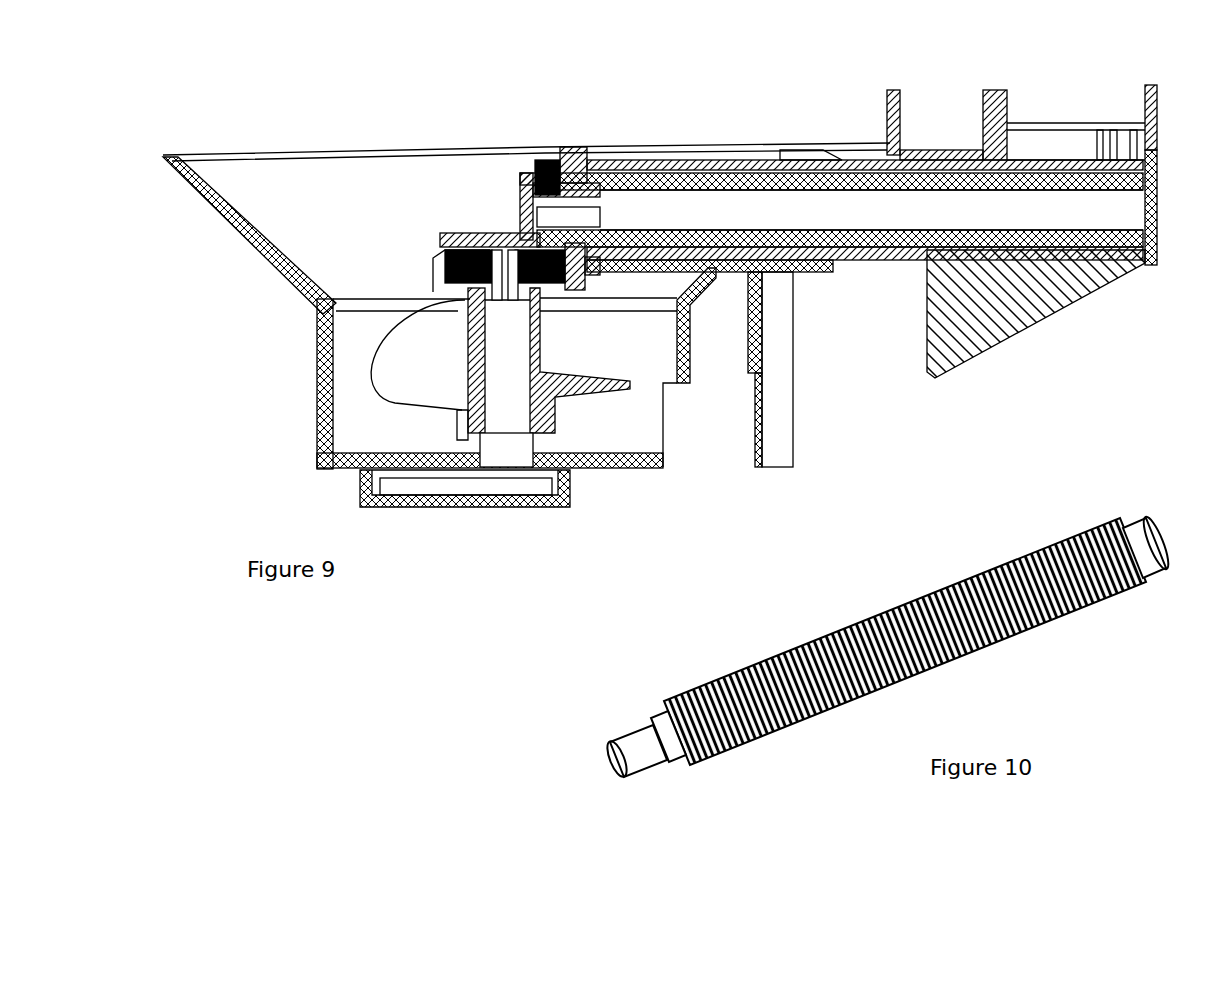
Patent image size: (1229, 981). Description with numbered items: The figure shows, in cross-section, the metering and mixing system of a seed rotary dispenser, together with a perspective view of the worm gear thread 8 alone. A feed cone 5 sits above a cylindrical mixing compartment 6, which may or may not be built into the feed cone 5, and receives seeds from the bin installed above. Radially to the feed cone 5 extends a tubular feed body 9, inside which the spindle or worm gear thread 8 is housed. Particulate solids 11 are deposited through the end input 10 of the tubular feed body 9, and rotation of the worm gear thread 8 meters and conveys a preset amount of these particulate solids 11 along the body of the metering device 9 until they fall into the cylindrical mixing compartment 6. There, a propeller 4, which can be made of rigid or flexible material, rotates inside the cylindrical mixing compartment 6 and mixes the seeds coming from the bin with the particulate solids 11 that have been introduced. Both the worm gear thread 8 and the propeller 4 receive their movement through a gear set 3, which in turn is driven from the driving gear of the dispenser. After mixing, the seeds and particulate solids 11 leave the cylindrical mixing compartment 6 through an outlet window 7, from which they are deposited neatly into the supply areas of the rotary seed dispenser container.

In FIG. 9, the gear set 3 is at (548, 180).
In FIG. 9, the propeller 4 is at (478, 372).
In FIG. 9, the feed cone 5 is at (263, 262).
In FIG. 9, the cylindrical mixing compartment 6 is at (356, 409).
In FIG. 9, the outlet window 7 is at (674, 422).
In FIG. 9, the worm gear thread 8 is at (1002, 258).
In FIG. 10, the worm gear thread 8 is at (1043, 623).
In FIG. 9, the feed body 9 is at (778, 160).
In FIG. 9, the end input 10 is at (1065, 150).
In FIG. 9, the particulate solids 11 is at (623, 258).